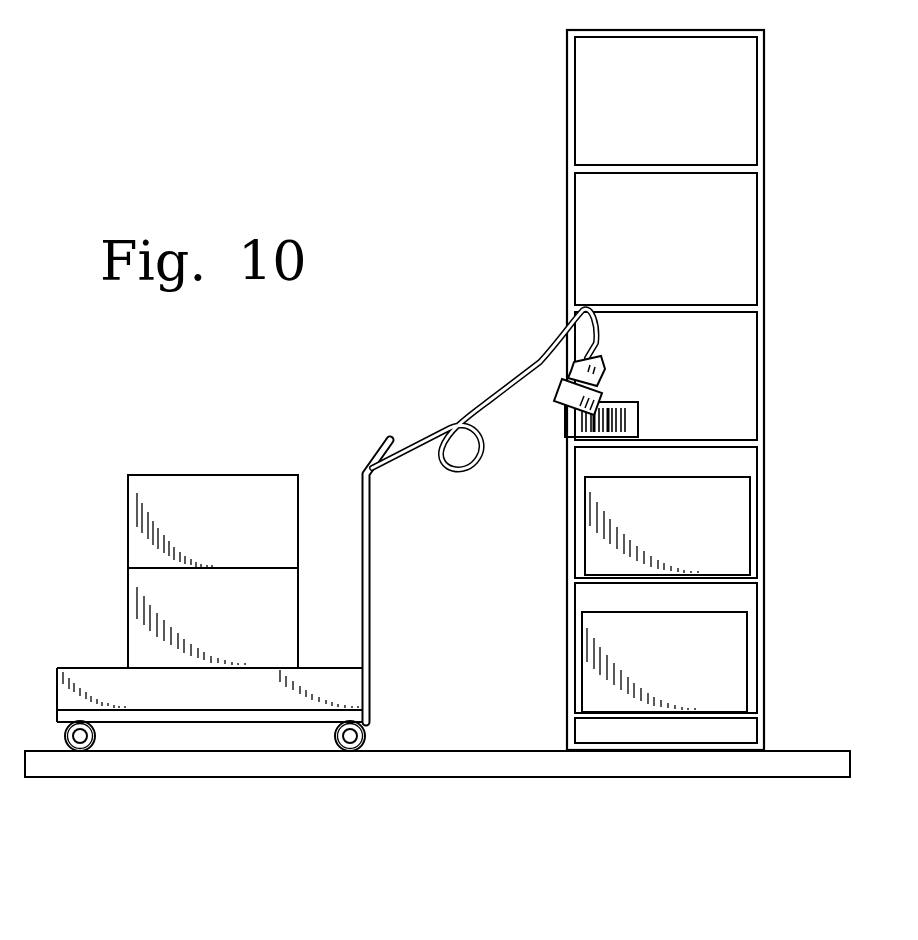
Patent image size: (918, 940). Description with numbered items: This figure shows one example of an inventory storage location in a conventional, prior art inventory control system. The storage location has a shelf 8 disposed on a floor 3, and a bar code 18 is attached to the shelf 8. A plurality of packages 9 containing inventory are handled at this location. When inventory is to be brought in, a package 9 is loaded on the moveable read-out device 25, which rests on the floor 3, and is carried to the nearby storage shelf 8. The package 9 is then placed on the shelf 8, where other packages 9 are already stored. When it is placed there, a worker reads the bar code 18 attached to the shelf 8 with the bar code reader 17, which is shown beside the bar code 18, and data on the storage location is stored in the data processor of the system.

The floor 3 is at (497, 750).
The shelf rack 8 is at (565, 105).
The boxes / articles 9 is at (229, 536).
The barcode scanner 17 is at (557, 393).
The barcode label 18 is at (632, 418).
The cart 25 is at (100, 668).